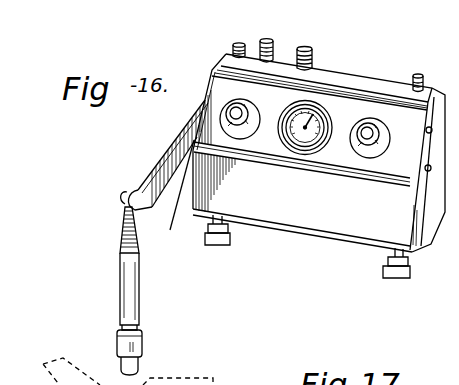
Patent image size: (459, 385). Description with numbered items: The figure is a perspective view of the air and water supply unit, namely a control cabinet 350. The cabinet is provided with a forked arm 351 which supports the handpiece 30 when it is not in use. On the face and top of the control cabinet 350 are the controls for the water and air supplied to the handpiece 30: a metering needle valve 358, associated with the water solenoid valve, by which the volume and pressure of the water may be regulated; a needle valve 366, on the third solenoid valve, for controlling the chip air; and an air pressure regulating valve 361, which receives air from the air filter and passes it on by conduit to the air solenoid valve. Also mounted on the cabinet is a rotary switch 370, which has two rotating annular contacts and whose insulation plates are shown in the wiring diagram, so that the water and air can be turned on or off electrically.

The control cabinet 350 is at (354, 70).
The forked arm 351 is at (174, 157).
The metering needle valve 358 is at (267, 45).
The needle valve 366 is at (313, 49).
The rotary switch 370 is at (235, 99).
The air pressure regulating valve 361 is at (384, 128).
The handpiece 30 is at (126, 271).